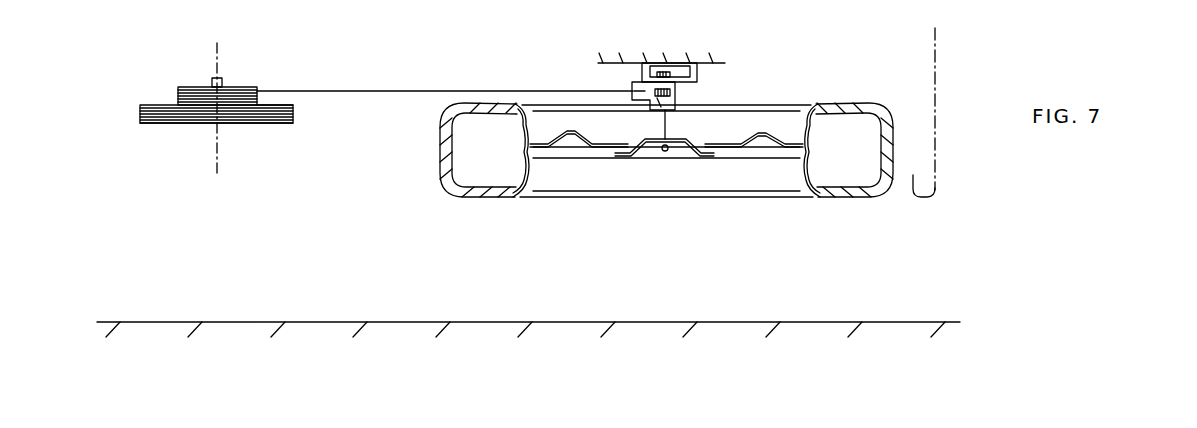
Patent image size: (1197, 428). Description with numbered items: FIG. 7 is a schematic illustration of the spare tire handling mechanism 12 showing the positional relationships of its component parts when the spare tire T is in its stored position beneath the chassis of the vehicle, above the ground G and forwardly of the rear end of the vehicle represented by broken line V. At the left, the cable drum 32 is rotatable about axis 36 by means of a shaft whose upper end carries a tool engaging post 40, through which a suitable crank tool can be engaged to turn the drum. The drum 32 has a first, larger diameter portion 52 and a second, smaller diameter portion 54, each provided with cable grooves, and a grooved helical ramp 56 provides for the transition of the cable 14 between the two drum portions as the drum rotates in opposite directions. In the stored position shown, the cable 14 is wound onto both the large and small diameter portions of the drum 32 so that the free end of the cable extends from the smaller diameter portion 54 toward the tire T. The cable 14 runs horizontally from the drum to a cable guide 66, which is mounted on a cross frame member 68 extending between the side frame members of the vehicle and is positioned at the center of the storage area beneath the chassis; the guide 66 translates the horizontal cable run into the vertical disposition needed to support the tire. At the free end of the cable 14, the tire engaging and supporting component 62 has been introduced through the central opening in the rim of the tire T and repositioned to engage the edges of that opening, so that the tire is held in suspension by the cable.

The wheel balancing weight assembly 12 is at (201, 97).
The cable 14 is at (445, 91).
The drum 32 is at (251, 132).
The axis 36 is at (218, 55).
The tool engaging post 40 is at (222, 84).
The larger diameter drum portion 52 is at (136, 119).
The smaller diameter drum portion 54 is at (176, 87).
The helical ramp 56 is at (277, 94).
The tire engaging and supporting component 62 is at (690, 155).
The cable guide 66 is at (624, 77).
The cross frame member 68 is at (696, 76).
The tire T is at (856, 98).
The ground G is at (303, 321).
The rear end of the vehicle V is at (938, 100).